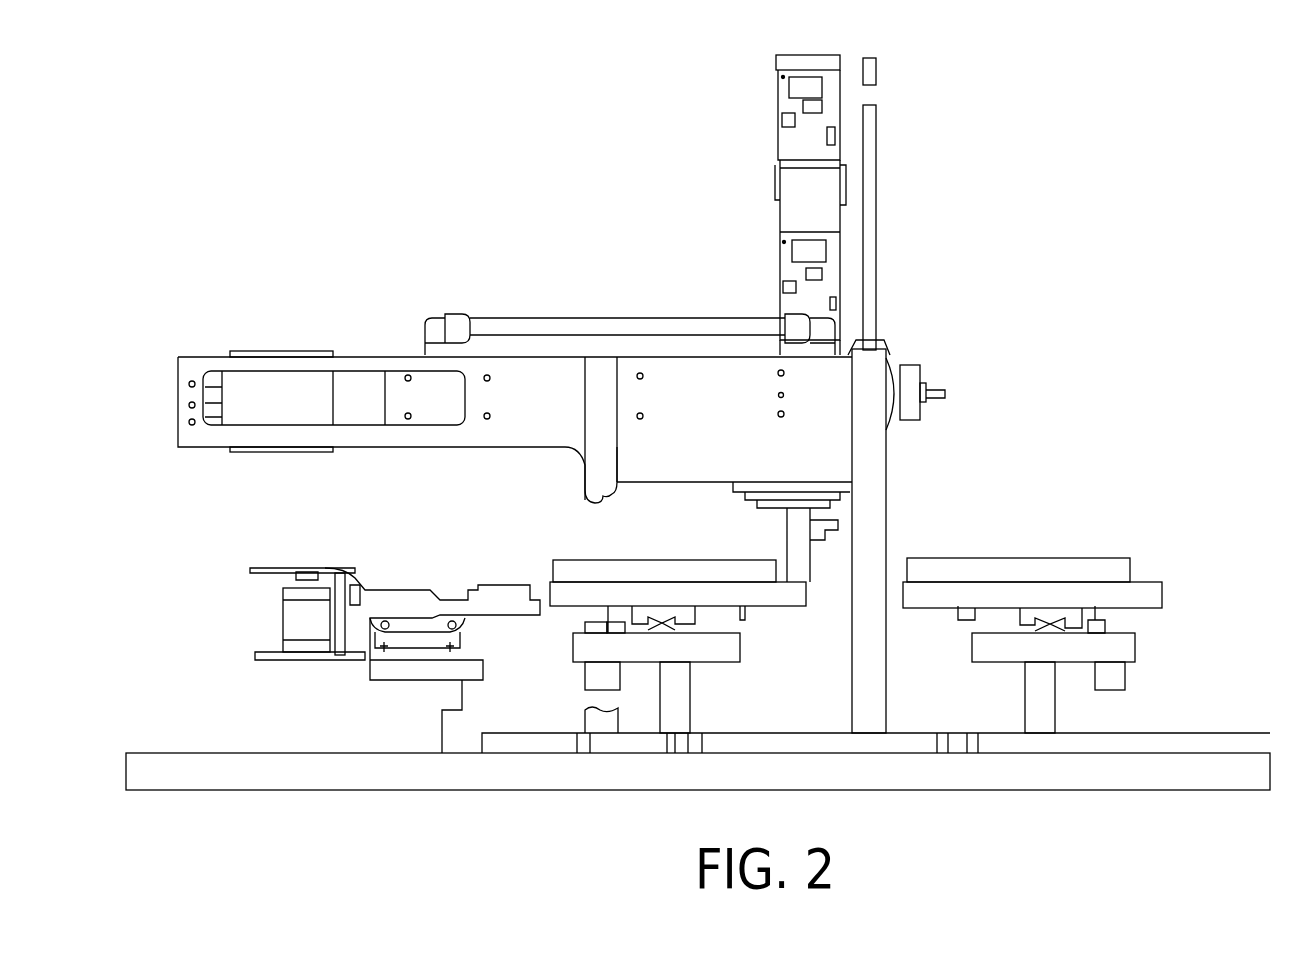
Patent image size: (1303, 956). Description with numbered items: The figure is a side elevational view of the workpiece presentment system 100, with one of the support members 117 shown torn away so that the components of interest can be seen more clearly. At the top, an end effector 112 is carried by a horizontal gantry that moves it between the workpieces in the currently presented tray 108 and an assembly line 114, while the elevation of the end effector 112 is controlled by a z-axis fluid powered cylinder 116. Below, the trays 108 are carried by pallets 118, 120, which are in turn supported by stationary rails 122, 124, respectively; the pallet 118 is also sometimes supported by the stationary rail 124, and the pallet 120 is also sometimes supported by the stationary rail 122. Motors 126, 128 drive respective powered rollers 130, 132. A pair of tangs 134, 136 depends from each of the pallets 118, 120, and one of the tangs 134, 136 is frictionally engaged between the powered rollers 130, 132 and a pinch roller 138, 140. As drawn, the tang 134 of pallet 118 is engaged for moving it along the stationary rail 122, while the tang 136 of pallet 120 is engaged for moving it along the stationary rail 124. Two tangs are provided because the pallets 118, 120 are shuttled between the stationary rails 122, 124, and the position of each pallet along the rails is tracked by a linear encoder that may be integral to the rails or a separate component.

The workpiece presentment system 100 is at (520, 44).
The tray 108 is at (685, 560).
The end effector 112 is at (790, 547).
The assembly line 114 is at (468, 600).
The z-axis fluid powered cylinder 116 is at (777, 80).
The support member 117 is at (592, 498).
The pallet 118 is at (778, 612).
The pallet 120 is at (1155, 607).
The stationary rail 122 is at (668, 632).
The stationary rail 124 is at (1050, 626).
The motor 126 is at (585, 677).
The motor 128 is at (1128, 683).
The powered roller 130 is at (585, 628).
The powered roller 132 is at (1130, 627).
The tang 134 is at (610, 630).
The tang 136 is at (745, 615).
The pinch roller 138 is at (630, 628).
The pinch roller 140 is at (1095, 620).